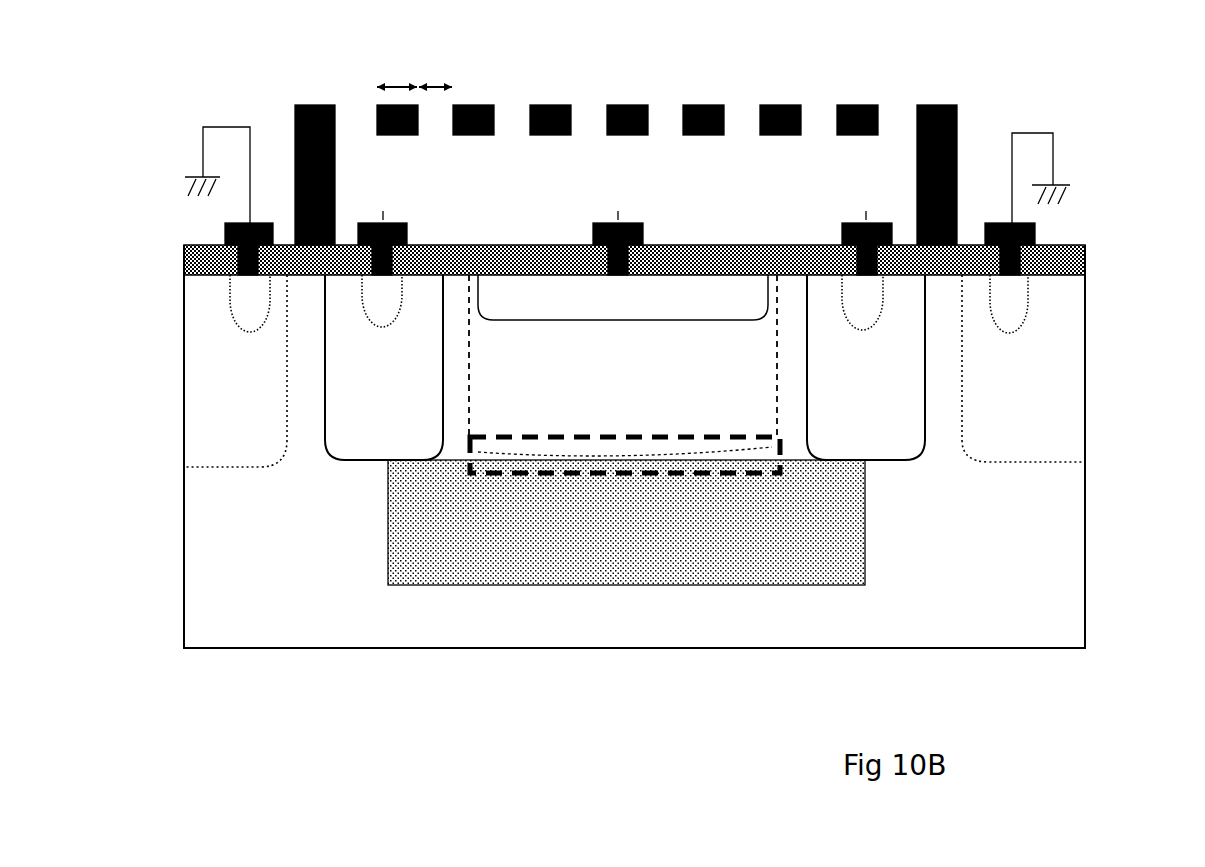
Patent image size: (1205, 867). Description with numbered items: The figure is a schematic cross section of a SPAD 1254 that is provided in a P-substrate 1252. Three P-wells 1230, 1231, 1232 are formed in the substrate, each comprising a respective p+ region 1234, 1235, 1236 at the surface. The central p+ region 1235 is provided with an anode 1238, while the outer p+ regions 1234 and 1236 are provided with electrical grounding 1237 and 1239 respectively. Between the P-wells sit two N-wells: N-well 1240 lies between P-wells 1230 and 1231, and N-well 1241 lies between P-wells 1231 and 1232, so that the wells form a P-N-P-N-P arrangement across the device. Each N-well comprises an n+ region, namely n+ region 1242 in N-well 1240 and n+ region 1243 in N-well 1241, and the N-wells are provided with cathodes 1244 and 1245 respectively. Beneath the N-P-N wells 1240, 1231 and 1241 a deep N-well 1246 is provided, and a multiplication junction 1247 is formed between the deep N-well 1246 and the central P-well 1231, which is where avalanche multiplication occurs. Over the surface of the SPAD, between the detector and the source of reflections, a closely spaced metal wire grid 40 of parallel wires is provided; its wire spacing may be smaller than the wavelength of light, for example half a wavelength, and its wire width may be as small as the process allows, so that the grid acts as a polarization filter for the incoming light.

The metal wire grid 40 is at (758, 108).
The P-well 1230 is at (253, 381).
The P-well 1231 is at (586, 369).
The P-well 1232 is at (1044, 389).
The p+ region 1234 is at (232, 289).
The p+ region 1235 is at (584, 309).
The p+ region 1236 is at (1026, 290).
The electrical grounding 1237 is at (225, 232).
The anode 1238 is at (643, 232).
The electrical grounding 1239 is at (1035, 230).
The N-well 1240 is at (394, 381).
The N-well 1241 is at (876, 389).
The n+ region 1242 is at (388, 320).
The n+ region 1243 is at (872, 320).
The cathode 1244 is at (355, 178).
The cathode 1245 is at (880, 178).
The deep N-well 1246 is at (566, 547).
The multiplication junction 1247 is at (730, 475).
The P-substrate 1252 is at (458, 632).
The SPAD 1254 is at (1085, 648).